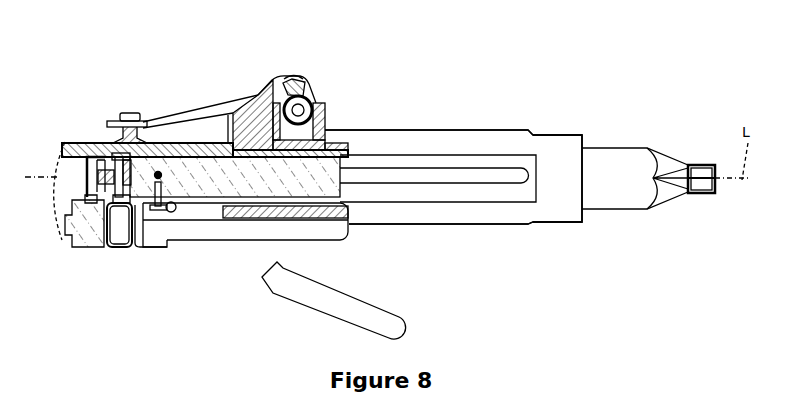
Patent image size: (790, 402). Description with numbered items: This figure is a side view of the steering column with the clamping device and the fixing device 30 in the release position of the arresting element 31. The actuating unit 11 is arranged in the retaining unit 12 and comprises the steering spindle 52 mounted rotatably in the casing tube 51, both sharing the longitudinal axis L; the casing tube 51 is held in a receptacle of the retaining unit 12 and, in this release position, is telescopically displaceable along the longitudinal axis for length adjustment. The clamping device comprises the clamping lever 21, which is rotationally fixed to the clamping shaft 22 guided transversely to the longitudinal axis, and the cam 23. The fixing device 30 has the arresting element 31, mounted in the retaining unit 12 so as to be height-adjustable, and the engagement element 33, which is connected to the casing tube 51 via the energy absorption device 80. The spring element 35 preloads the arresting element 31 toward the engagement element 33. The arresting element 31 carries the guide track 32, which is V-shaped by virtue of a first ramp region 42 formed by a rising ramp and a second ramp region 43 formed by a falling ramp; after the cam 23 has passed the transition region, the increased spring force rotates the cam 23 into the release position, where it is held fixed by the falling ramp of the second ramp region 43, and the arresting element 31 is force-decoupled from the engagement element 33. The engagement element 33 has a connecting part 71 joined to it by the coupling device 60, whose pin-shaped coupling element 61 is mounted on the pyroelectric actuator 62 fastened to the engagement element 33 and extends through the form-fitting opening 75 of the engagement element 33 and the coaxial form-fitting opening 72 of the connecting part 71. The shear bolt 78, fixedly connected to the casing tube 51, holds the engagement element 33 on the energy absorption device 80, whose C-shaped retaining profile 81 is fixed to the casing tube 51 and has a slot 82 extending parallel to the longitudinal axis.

The actuating unit 11 is at (507, 140).
The retaining unit 12 is at (195, 232).
The clamping lever 21 is at (405, 330).
The clamping shaft 22 is at (312, 112).
The cam 23 is at (300, 108).
The fixing device 30 is at (302, 83).
The arresting element 31 is at (256, 100).
The guide track 32 is at (290, 78).
The engagement element 33 is at (228, 212).
The spring element 35 is at (195, 108).
The first ramp region 42 is at (287, 86).
The second ramp region 43 is at (298, 82).
The casing tube 51 is at (530, 139).
The steering spindle 52 is at (605, 167).
The coupling device 60 is at (84, 252).
The coupling element 61 is at (107, 178).
The pyroelectric actuator 62 is at (121, 236).
The connecting part 71 is at (88, 168).
The form-fitting opening 72 is at (118, 138).
The form-fitting opening 75 is at (122, 168).
The shear bolt 78 is at (159, 168).
The energy absorption device 80 is at (378, 150).
The retaining profile 81 is at (480, 163).
The slot 82 is at (431, 178).